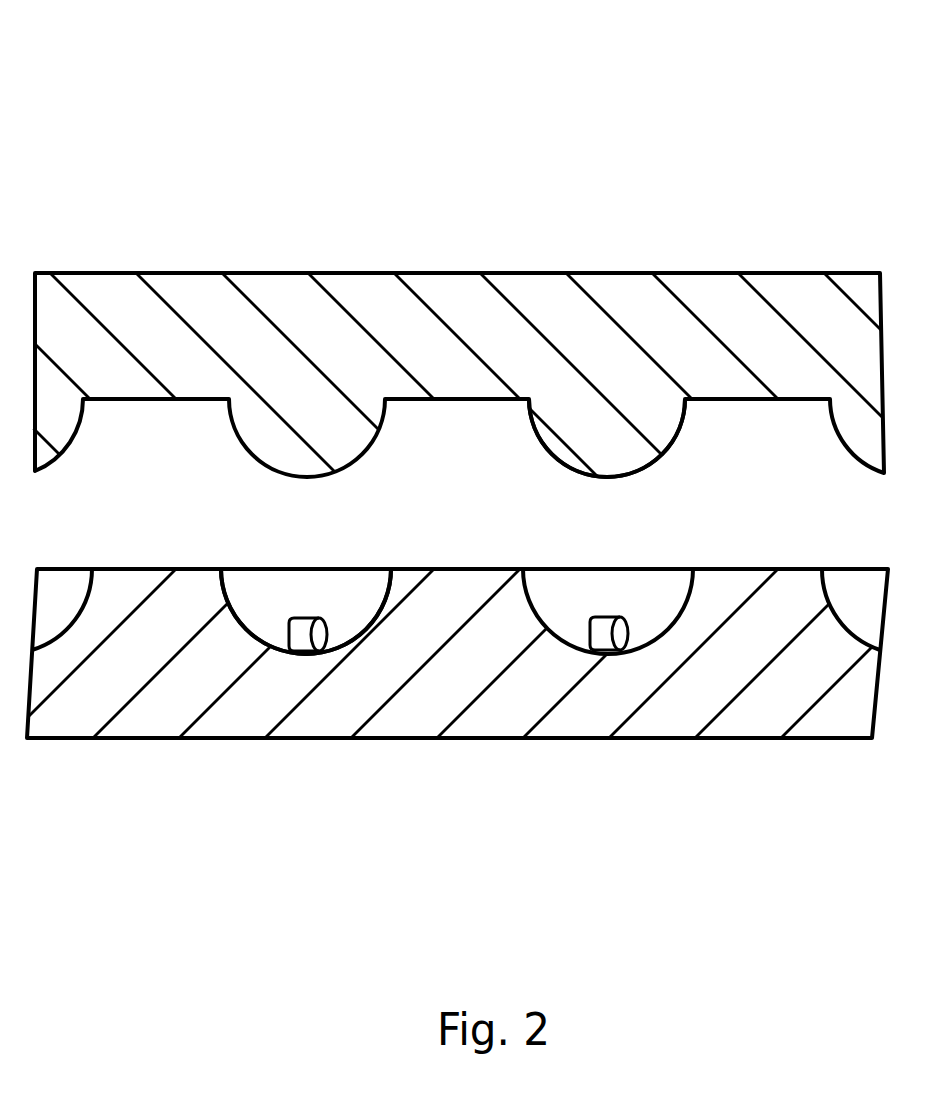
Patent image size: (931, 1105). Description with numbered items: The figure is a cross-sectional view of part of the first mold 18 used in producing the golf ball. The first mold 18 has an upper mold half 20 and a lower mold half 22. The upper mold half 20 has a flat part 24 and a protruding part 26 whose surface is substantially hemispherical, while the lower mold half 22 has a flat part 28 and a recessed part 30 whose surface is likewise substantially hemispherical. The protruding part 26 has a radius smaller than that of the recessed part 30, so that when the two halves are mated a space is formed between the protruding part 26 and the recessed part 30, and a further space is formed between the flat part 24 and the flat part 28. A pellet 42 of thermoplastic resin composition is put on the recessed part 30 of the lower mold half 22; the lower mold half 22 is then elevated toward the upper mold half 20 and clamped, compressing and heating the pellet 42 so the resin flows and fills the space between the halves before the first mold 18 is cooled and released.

The first mold 18 is at (881, 63).
The upper mold half 20 is at (373, 295).
The lower mold half 22 is at (410, 713).
The flat part 24 is at (140, 400).
The protruding part 26 is at (617, 445).
The flat part 28 is at (752, 569).
The recessed part 30 is at (247, 620).
The pellet 42 is at (607, 627).